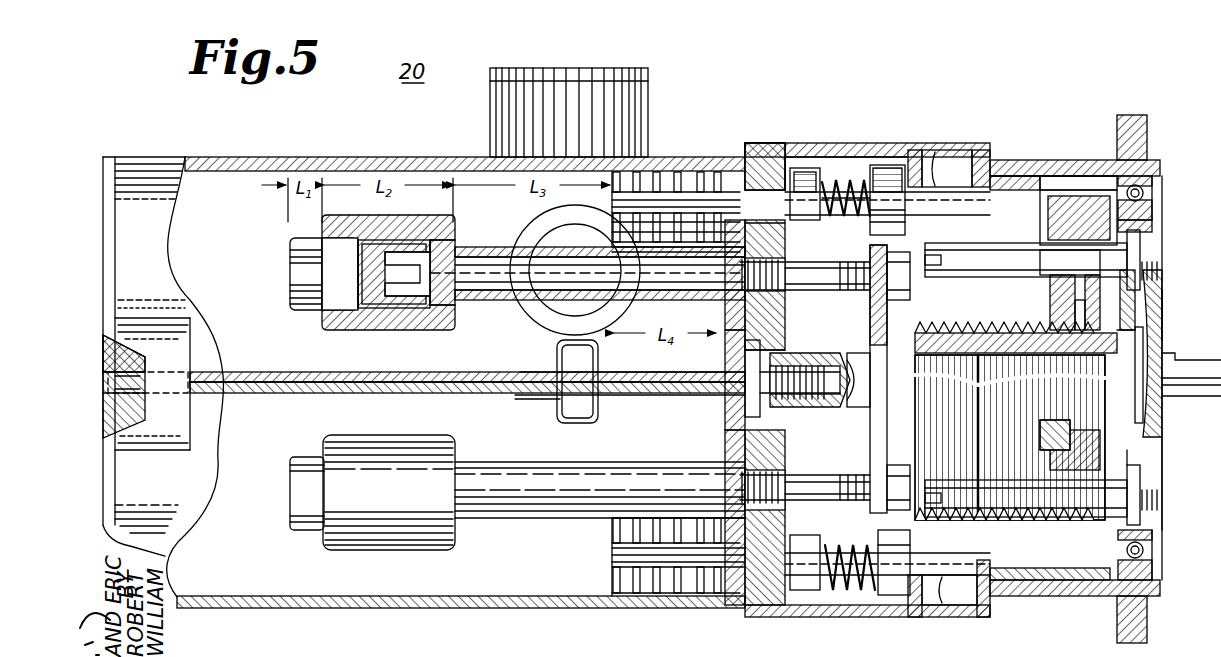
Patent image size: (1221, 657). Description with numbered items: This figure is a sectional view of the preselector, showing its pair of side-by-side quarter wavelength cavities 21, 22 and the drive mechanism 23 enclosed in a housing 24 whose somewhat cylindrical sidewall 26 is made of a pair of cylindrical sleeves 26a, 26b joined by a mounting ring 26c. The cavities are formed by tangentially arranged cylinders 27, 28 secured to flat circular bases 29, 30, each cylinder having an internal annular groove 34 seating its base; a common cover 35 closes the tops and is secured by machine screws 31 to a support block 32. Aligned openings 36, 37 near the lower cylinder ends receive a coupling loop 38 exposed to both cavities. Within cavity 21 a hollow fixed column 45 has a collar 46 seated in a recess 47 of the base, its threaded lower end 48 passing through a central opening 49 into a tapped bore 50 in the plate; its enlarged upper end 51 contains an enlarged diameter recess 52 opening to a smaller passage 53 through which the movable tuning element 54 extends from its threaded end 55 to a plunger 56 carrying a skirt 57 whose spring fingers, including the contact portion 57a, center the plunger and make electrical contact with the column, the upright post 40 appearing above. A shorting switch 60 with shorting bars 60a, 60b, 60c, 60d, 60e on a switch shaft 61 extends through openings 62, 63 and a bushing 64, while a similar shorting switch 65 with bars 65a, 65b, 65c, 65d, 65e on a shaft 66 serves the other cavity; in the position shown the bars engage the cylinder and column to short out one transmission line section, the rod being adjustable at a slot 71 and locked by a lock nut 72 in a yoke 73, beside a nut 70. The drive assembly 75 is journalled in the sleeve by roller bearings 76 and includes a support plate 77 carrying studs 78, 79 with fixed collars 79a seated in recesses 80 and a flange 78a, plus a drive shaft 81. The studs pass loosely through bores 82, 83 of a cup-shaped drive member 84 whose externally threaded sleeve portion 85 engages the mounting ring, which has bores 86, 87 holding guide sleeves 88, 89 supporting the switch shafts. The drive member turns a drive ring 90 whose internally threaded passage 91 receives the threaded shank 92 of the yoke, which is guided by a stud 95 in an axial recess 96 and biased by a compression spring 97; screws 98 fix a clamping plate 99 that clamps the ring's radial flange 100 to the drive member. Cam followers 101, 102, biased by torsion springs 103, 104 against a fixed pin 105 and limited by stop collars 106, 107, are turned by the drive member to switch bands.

The quarter wavelength cavity 21 is at (248, 183).
The quarter wavelength cavity 22 is at (292, 570).
The drive mechanism 23 is at (1032, 161).
The housing 24 is at (883, 145).
The cylindrical sidewall 26 is at (958, 150).
The cylindrical sleeve 26a is at (836, 144).
The cylindrical sleeve 26b is at (1092, 160).
The mounting ring 26c is at (948, 168).
The cylinder 27 is at (355, 157).
The cylinder 28 is at (384, 607).
The cavity base 29 is at (728, 350).
The cavity base 30 is at (728, 430).
The machine screw 31 is at (106, 378).
The support block 32 is at (126, 335).
The internal annular groove 34 is at (745, 148).
The cover 35 is at (104, 272).
The opening 36 is at (647, 372).
The opening 37 is at (622, 393).
The coupling loop 38 is at (557, 352).
The upright post 40 is at (608, 64).
The fixed tuning element 45 is at (491, 240).
The annular collar 46 is at (728, 307).
The recess 47 is at (754, 294).
The lower end of column 48 is at (806, 278).
The central opening 49 is at (763, 234).
The tapped bore 50 is at (776, 250).
The enlarged upper end 51 is at (336, 331).
The enlarged diameter recess 52 is at (355, 330).
The passage 53 is at (482, 300).
The movable tuning element 54 is at (510, 288).
The threaded end 55 is at (805, 284).
The plunger 56 is at (290, 263).
The skirt 57 is at (406, 248).
The insert face 57a is at (358, 262).
The shorting switch 60 is at (622, 140).
The shorting bar 60a is at (618, 162).
The shorting bar 60b is at (650, 165).
The shorting bar 60c is at (666, 172).
The shorting bar 60d is at (690, 170).
The shorting bar 60e is at (708, 172).
The switch shaft 61 is at (612, 196).
The opening 62 is at (739, 198).
The opening 63 is at (764, 166).
The bushing 64 is at (787, 157).
The shorting switch 65 is at (610, 541).
The shorting bar 65a is at (618, 598).
The shorting bar 65b is at (637, 598).
The shorting bar 65c is at (656, 598).
The shorting bar 65d is at (678, 598).
The shorting bar 65e is at (700, 598).
The shaft 66 is at (612, 554).
The nut 70 is at (862, 279).
The slot 71 is at (912, 395).
The lock nut 72 is at (897, 292).
The yoke 73 is at (876, 318).
The drive assembly 75 is at (1206, 304).
The roller bearing 76 is at (1160, 193).
The support plate 77 is at (1150, 421).
The stud 78 is at (967, 258).
The pin flange 78a is at (1150, 228).
The stud 79 is at (957, 486).
The fixed collar 79a is at (1140, 475).
The recess 80 is at (1145, 270).
The drive shaft 81 is at (1216, 368).
The bore 82 is at (1072, 244).
The bore 83 is at (1086, 530).
The drive member 84 is at (1044, 300).
The externally threaded sleeve portion 85 is at (1061, 225).
The bore 86 is at (1005, 176).
The bore 87 is at (1009, 588).
The guide sleeve 88 is at (916, 151).
The guide sleeve 89 is at (944, 600).
The drive ring 90 is at (1050, 322).
The internally threaded through passage 91 is at (1126, 346).
The shank 92 is at (969, 330).
The stud 95 is at (832, 410).
The axial recess 96 is at (862, 356).
The compression spring 97 is at (944, 330).
The screw 98 is at (1112, 454).
The clamping plate 99 is at (1100, 299).
The radially extending flange 100 is at (1080, 300).
The cam follower 101 is at (870, 236).
The cam follower 102 is at (895, 596).
The torsion spring 103 is at (842, 190).
The torsion spring 104 is at (845, 590).
The fixed pin 105 is at (823, 546).
The stop collar 106 is at (810, 168).
The stop collar 107 is at (805, 592).